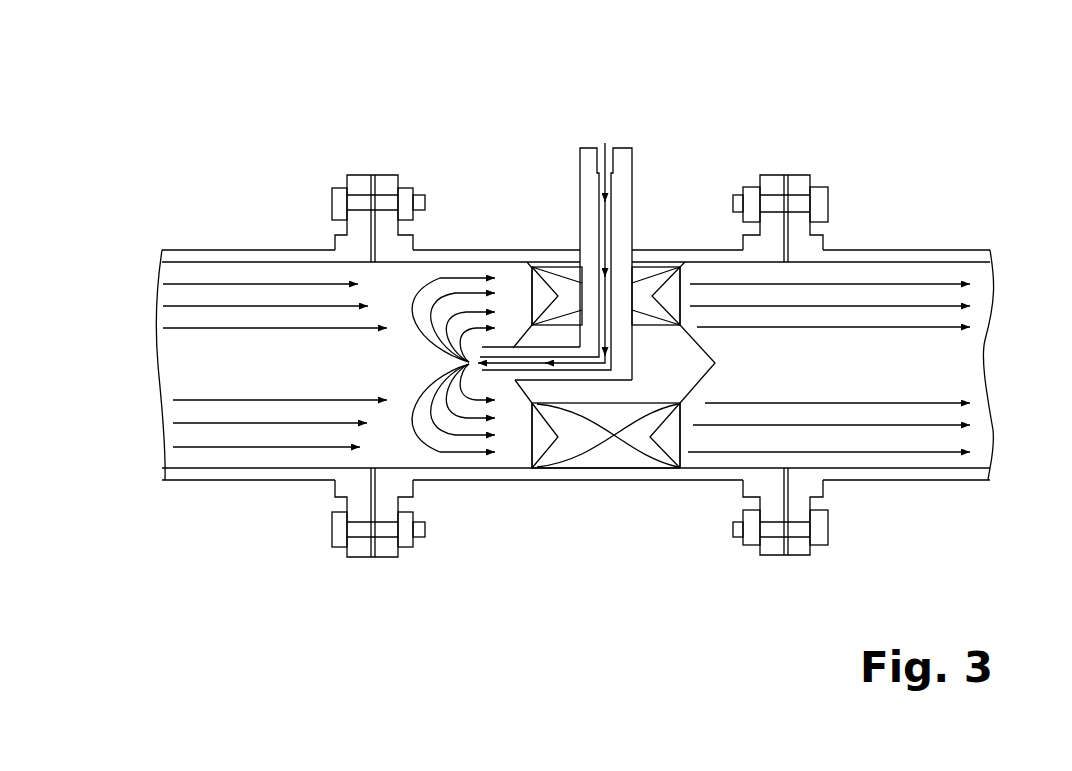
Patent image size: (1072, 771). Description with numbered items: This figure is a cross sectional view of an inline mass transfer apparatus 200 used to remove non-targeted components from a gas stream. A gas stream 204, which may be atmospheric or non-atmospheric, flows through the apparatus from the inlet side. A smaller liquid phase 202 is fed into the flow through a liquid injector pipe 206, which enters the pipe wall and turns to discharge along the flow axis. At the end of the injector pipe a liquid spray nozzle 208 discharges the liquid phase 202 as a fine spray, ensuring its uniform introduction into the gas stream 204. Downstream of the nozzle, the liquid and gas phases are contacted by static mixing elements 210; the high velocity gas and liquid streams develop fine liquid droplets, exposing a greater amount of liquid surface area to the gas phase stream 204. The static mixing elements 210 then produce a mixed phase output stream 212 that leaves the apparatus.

The inline mass transfer apparatus 200 is at (873, 93).
The liquid phase 202 is at (613, 147).
The gas stream 204 is at (146, 357).
The liquid injector pipe 206 is at (623, 230).
The liquid spray nozzle 208 is at (487, 373).
The static mixing elements 210 is at (610, 452).
The mixed phase output stream 212 is at (987, 364).